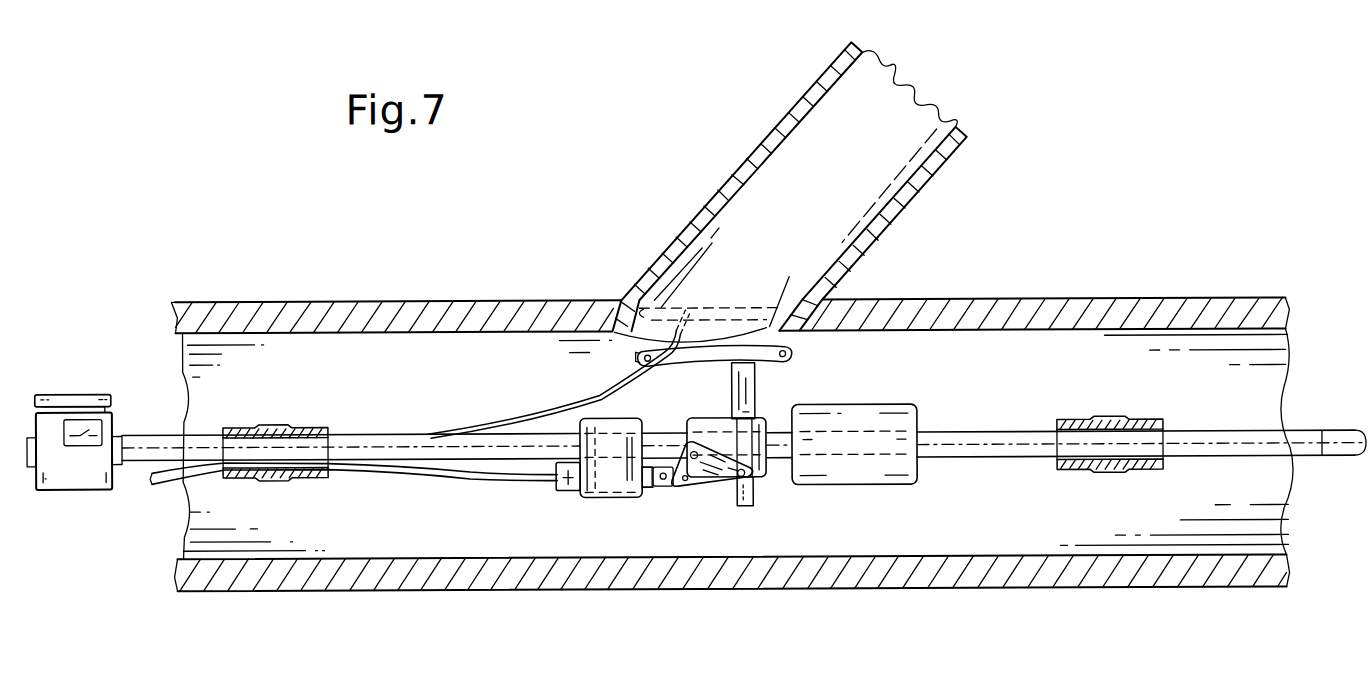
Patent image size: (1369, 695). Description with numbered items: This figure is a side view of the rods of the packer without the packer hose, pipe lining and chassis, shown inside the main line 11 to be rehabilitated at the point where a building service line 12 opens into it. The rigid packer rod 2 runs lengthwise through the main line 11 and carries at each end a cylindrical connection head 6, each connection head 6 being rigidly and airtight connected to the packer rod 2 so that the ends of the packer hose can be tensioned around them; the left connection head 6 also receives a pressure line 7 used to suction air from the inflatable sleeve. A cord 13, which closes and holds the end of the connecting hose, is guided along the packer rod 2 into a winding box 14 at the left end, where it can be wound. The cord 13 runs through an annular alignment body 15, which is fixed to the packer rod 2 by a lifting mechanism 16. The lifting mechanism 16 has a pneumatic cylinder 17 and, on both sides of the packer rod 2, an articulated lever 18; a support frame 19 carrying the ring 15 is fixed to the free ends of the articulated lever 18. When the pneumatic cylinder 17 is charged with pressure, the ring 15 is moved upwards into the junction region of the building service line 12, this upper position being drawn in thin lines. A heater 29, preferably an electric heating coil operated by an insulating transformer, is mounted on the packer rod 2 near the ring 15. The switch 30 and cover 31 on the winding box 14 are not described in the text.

The packer rod 2 is at (990, 437).
The connection head 6 is at (242, 428).
The pressure line 7 is at (503, 481).
The main line 11 is at (1046, 312).
The building service line 12 is at (883, 228).
The cord 13 is at (573, 400).
The winding box 14 is at (77, 473).
The annular alignment body 15 is at (787, 346).
The lifting mechanism 16 is at (664, 485).
The pneumatic cylinder 17 is at (613, 489).
The articulated lever 18 is at (718, 442).
The support frame 19 is at (748, 394).
The heater 29 is at (865, 470).
The switch 30 is at (98, 422).
The cover 31 is at (72, 393).